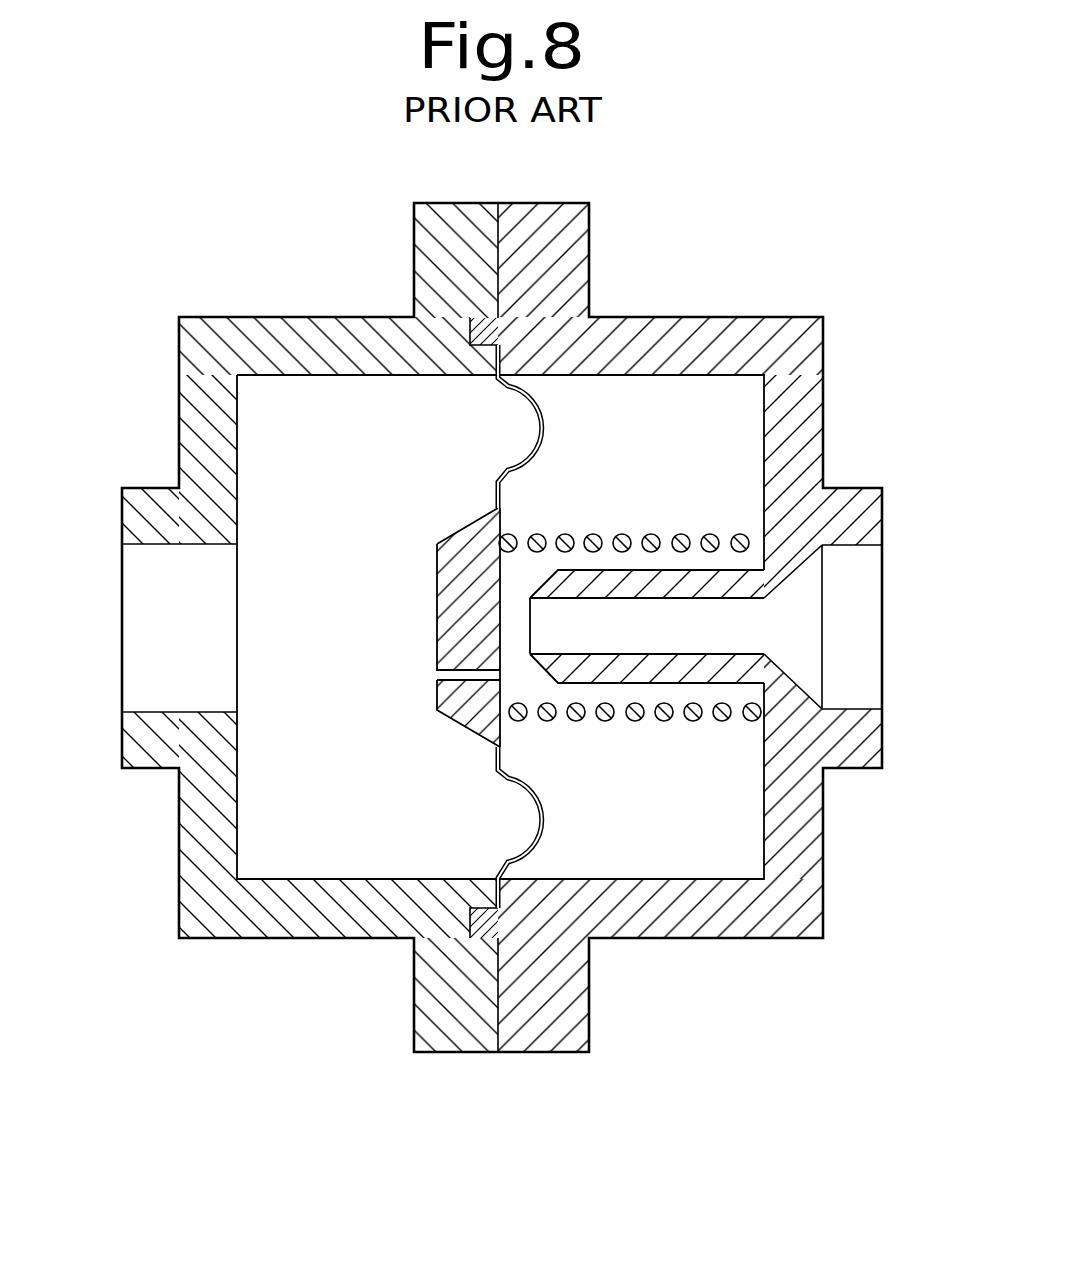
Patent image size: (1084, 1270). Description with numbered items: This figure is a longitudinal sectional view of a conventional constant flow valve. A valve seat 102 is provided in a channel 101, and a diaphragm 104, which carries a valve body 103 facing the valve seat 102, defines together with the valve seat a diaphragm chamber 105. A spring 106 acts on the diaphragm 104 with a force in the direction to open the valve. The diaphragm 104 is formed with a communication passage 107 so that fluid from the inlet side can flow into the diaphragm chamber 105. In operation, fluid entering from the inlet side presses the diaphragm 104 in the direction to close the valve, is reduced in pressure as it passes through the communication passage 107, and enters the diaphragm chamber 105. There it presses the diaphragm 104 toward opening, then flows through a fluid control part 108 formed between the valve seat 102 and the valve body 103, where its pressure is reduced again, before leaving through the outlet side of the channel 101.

The channel 101 is at (950, 622).
The valve seat 102 is at (652, 588).
The valve body 103 is at (486, 558).
The diaphragm 104 is at (546, 390).
The diaphragm chamber 105 is at (612, 775).
The spring 106 is at (665, 718).
The communication passage 107 is at (468, 679).
The fluid control part 108 is at (517, 668).